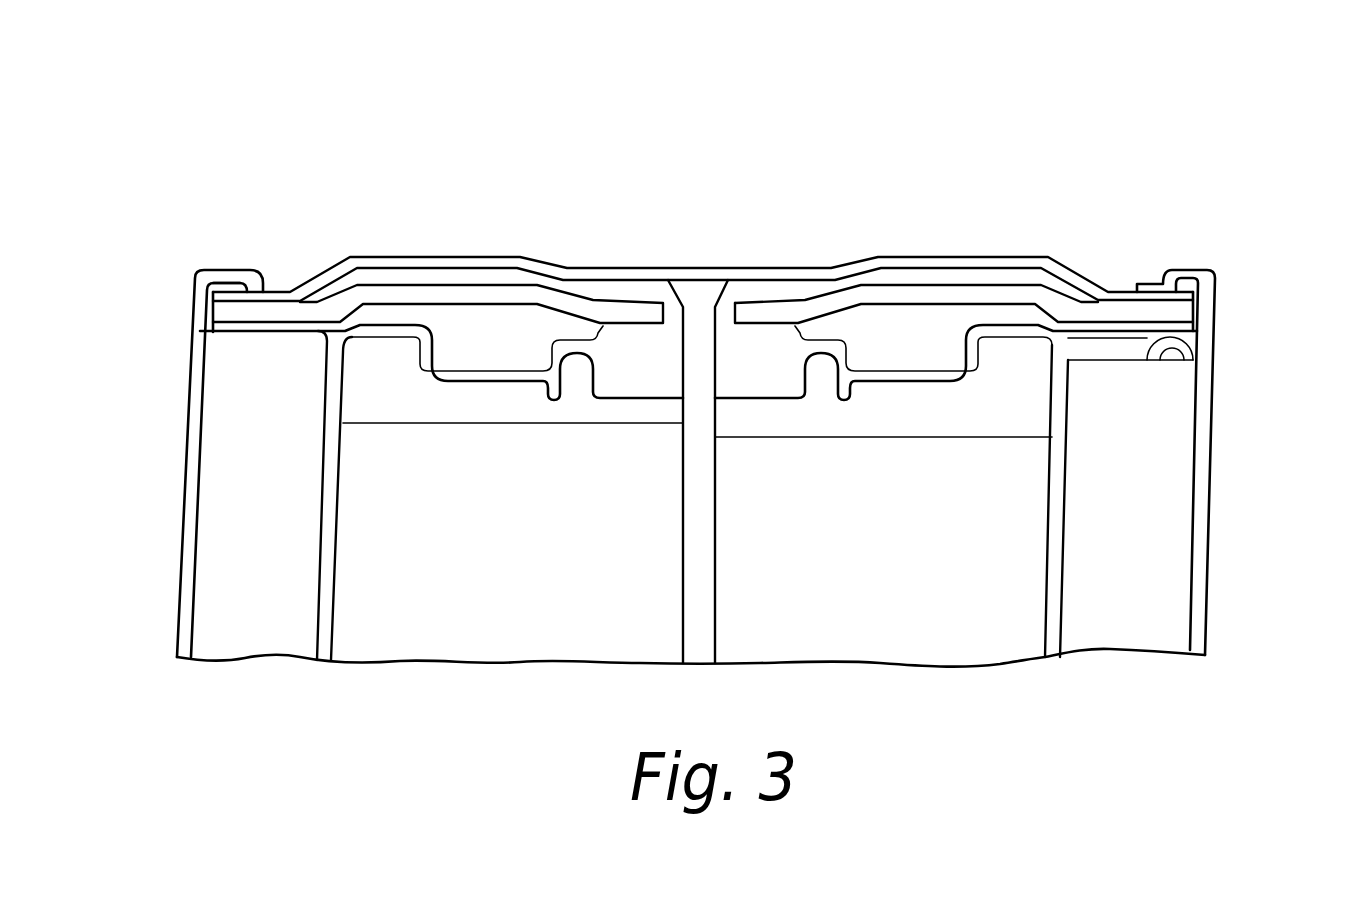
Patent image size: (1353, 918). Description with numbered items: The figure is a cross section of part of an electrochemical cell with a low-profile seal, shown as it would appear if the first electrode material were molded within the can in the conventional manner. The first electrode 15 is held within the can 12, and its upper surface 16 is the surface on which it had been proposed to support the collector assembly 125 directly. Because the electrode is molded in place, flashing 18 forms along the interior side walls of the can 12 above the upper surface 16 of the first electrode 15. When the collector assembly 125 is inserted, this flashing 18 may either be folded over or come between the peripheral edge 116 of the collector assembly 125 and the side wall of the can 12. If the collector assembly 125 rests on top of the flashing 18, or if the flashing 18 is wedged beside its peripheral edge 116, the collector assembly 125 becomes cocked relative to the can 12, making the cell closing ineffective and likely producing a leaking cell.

The collector assembly 125 is at (1118, 250).
The peripheral edge 116 is at (213, 312).
The upper surface 16 is at (1123, 362).
The flashing 18 is at (213, 331).
The can 12 is at (1203, 410).
The first electrode 15 is at (1163, 478).